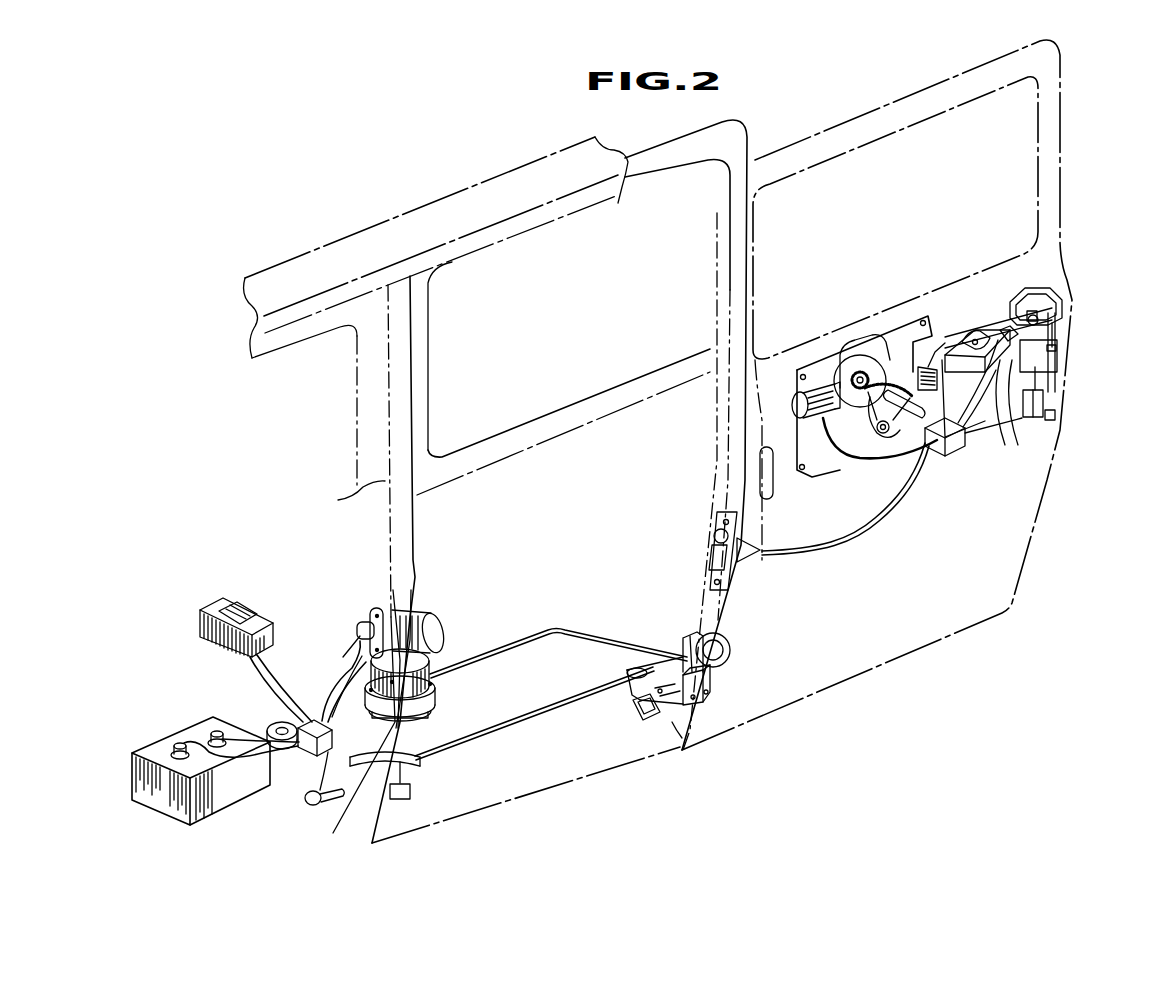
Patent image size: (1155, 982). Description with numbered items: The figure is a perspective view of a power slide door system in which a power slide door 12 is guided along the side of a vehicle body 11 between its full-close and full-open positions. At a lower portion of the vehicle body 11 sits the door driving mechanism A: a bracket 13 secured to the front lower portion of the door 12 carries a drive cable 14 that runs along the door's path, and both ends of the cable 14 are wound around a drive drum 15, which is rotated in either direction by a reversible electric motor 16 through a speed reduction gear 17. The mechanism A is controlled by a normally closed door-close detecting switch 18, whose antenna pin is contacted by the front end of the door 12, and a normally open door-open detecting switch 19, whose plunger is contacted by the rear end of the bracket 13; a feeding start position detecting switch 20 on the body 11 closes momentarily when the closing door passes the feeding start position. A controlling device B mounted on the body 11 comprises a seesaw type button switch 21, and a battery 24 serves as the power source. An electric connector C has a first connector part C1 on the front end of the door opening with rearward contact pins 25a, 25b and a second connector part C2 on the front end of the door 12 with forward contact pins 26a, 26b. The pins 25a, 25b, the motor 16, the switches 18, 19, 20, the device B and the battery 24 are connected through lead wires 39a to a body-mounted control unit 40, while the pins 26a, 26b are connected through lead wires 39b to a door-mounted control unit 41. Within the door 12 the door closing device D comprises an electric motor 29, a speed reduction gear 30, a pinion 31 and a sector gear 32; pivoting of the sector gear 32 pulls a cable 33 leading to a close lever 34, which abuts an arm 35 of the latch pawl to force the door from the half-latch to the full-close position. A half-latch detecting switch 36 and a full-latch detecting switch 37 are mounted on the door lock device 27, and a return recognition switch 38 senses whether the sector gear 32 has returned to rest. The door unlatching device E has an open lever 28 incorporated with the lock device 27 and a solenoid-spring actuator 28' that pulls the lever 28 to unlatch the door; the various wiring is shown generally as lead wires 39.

The vehicle body 11 is at (374, 238).
The power slide door 12 is at (1016, 548).
The bracket 13 is at (645, 716).
The drive cable 14 is at (522, 716).
The drive drum 15 is at (433, 708).
The reversible electric motor 16 is at (444, 626).
The speed reduction gear 17 is at (433, 654).
The door-close detecting switch 18 is at (322, 806).
The door-open detecting switch 19 is at (730, 660).
The feeding start position detecting switch 20 is at (412, 792).
The seesaw type button switch 21 is at (260, 596).
The battery 24 is at (218, 796).
The contact pin 25a is at (397, 617).
The contact pin 25b is at (426, 578).
The contact pin 26a is at (712, 540).
The contact pin 26b is at (712, 566).
The door lock device 27 is at (1058, 376).
The open lever 28 is at (1069, 352).
The solenoid-spring combination type actuator 28' is at (1084, 425).
The electric motor 29 is at (797, 395).
The speed reduction gear 30 is at (852, 368).
The pinion 31 is at (874, 372).
The sector gear 32 is at (896, 390).
The cable 33 is at (932, 362).
The close lever 34 is at (1057, 318).
The arm 35 is at (1060, 300).
The half-latch detecting switch 36 is at (1003, 424).
The full-latch detecting switch 37 is at (1008, 330).
The return recognition switch 38 is at (921, 455).
The electric wire 39 is at (334, 694).
The lead wires 39a is at (271, 758).
The lead wires 39b is at (955, 446).
The body-mounted control unit 40 is at (316, 756).
The door-mounted control unit 41 is at (955, 458).
The door driving mechanism A is at (469, 588).
The controlling device B is at (190, 611).
The electric connector C is at (352, 598).
The first connector part C1 is at (358, 615).
The second connector part C2 is at (710, 522).
The door closing device D is at (826, 338).
The door unlatching device E is at (1055, 425).